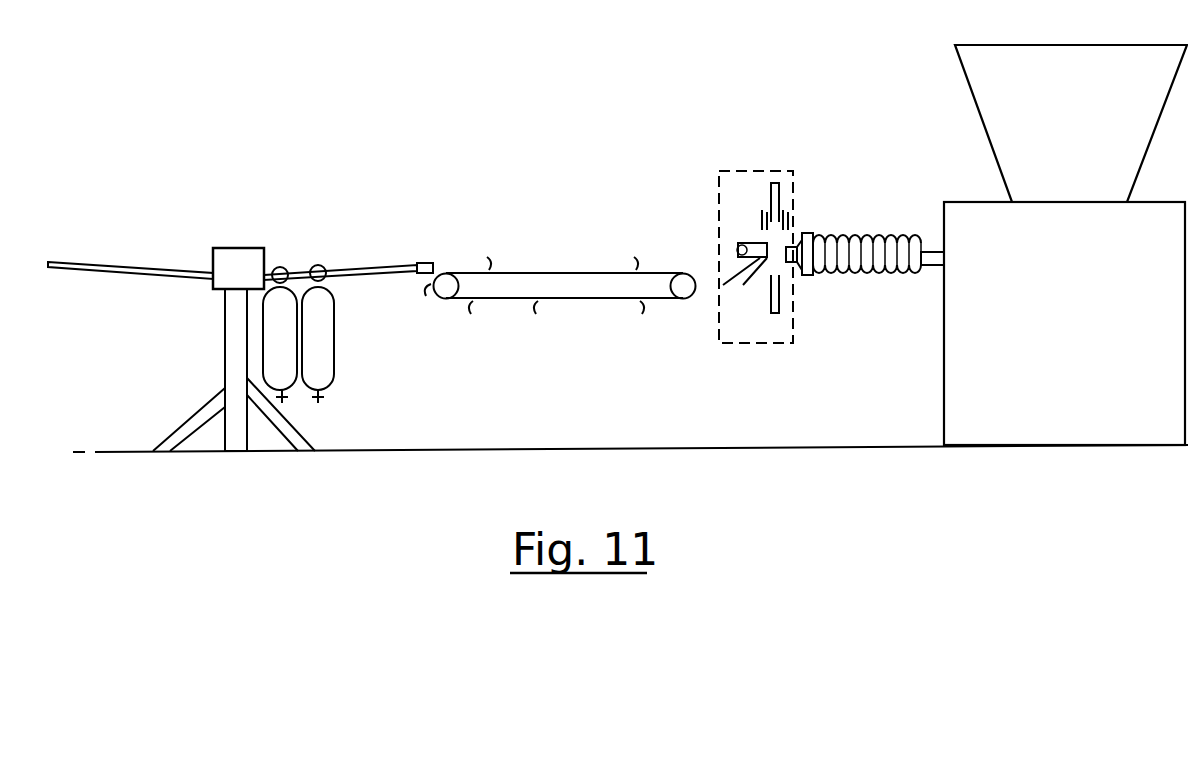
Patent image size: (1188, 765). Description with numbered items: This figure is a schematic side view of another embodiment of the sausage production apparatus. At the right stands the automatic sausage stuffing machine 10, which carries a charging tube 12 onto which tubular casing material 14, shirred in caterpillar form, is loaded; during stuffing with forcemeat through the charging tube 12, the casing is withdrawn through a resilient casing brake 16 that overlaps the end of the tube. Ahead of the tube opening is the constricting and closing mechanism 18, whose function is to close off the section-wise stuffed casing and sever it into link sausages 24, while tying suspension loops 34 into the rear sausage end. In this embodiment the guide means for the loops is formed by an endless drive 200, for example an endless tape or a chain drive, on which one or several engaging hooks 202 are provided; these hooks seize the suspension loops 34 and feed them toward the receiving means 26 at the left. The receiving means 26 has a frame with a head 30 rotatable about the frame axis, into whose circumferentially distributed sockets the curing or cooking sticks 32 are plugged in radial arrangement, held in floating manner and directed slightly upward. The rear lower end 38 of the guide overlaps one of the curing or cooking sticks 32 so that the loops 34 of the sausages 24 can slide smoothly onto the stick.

The automatic sausage stuffing machine 10 is at (1070, 276).
The charging tube 12 is at (935, 252).
The tubular casing material 14 is at (863, 275).
The casing brake 16 is at (807, 275).
The constricting and closing mechanism 18 is at (795, 213).
The sausages 24 is at (322, 368).
The receiving means 26 is at (200, 228).
The head 30 is at (237, 258).
The curing or cooking sticks 32 is at (77, 262).
The loops 34 is at (318, 264).
The rear lower end 38 is at (233, 363).
The endless drive 200 is at (603, 302).
The engaging hooks 202 is at (633, 267).